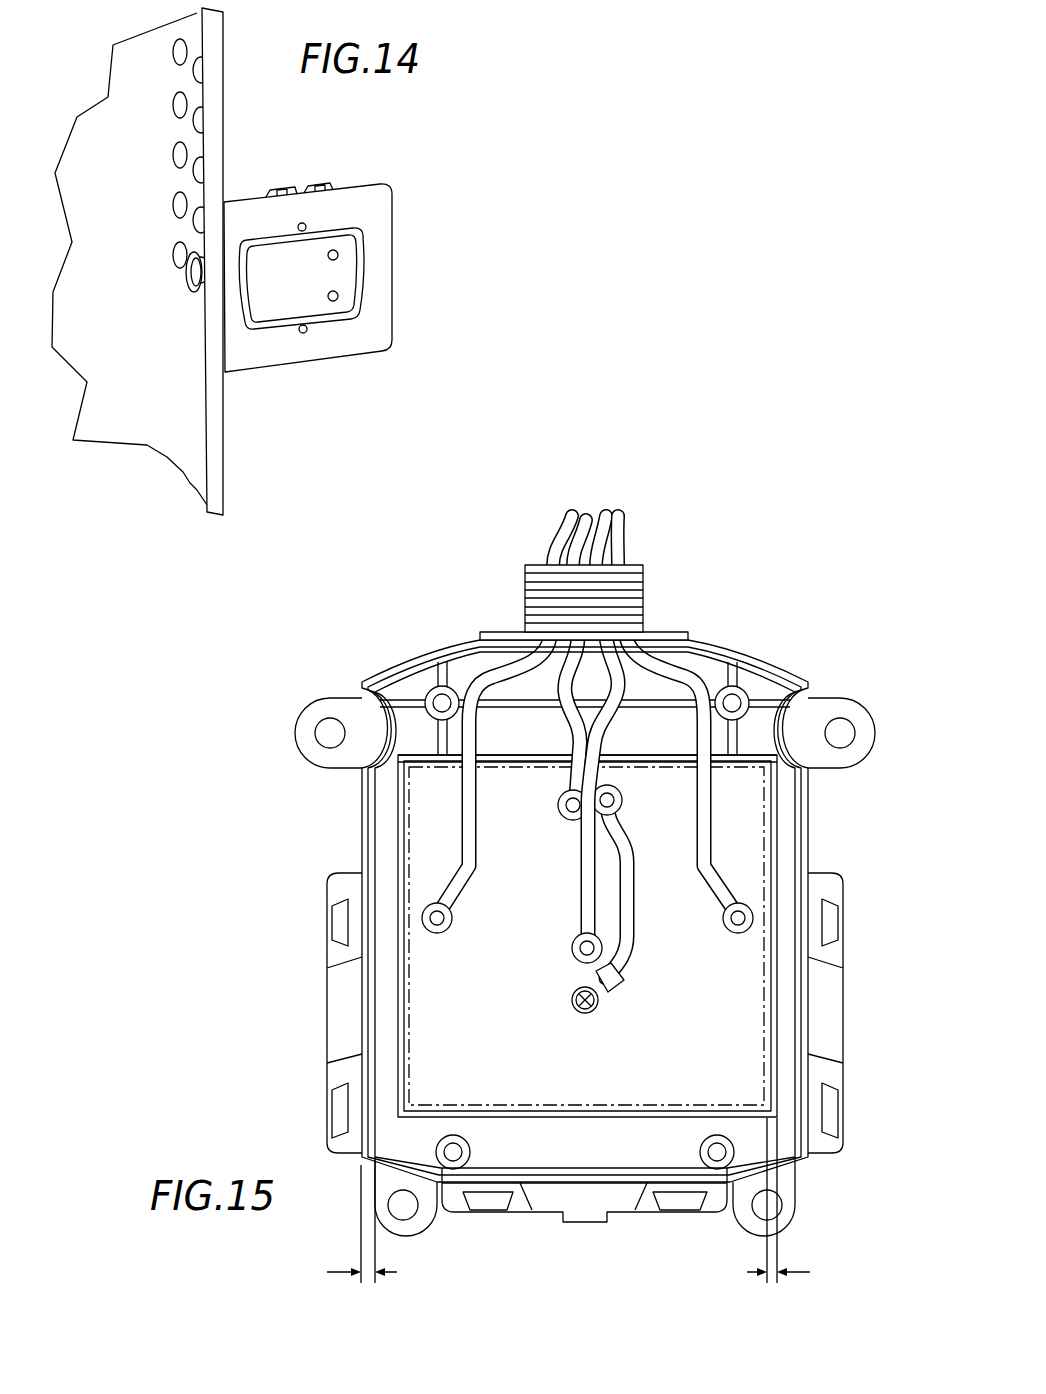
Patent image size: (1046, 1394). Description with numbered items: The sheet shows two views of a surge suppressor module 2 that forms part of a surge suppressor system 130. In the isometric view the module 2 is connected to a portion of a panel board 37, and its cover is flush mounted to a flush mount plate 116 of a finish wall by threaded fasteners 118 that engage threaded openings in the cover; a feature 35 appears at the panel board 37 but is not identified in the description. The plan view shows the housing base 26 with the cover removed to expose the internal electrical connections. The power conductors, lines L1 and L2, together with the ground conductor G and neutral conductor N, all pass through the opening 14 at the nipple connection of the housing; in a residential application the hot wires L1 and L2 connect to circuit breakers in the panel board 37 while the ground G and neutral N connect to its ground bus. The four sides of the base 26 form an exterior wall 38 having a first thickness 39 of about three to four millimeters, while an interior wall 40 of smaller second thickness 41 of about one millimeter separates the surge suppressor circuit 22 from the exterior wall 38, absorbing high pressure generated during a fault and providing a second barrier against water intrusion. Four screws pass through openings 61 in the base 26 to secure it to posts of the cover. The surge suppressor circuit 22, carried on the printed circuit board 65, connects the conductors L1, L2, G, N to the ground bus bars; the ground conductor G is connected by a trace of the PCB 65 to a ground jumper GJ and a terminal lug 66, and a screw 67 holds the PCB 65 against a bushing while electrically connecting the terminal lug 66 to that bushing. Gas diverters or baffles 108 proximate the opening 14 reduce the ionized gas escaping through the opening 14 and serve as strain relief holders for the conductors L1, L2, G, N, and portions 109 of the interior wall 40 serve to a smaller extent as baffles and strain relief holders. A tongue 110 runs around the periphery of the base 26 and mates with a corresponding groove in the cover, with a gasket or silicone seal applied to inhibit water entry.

In FIG. 14, the surge suppressor module 2 is at (309, 286).
In FIG. 15, the opening 14 is at (537, 560).
In FIG. 15, the surge suppressor circuit 22 is at (435, 1028).
In FIG. 15, the base 26 is at (810, 847).
In FIG. 14, the grommet 35 is at (187, 288).
In FIG. 14, the panel board 37 is at (210, 477).
In FIG. 15, the exterior wall 38 is at (360, 843).
In FIG. 15, the first thickness 39 is at (350, 1224).
In FIG. 15, the interior wall 40 is at (397, 1058).
In FIG. 15, the second thickness 41 is at (790, 1203).
In FIG. 15, the openings 61 is at (437, 692).
In FIG. 15, the printed circuit board 65 is at (423, 975).
In FIG. 15, the terminal lug 66 is at (612, 988).
In FIG. 15, the screw 67 is at (572, 1003).
In FIG. 15, the baffles 108 is at (532, 708).
In FIG. 15, the portions of the interior base wall 109 is at (423, 760).
In FIG. 15, the tongue 110 is at (370, 805).
In FIG. 14, the flush mount plate 116 is at (383, 266).
In FIG. 14, the threaded fasteners 118 is at (302, 222).
In FIG. 14, the surge suppressor system 130 is at (369, 466).
In FIG. 15, the ground conductor G is at (560, 812).
In FIG. 15, the neutral conductor N is at (580, 893).
In FIG. 15, the line L1 is at (477, 845).
In FIG. 15, the line L2 is at (697, 822).
In FIG. 15, the ground jumper GJ is at (635, 917).